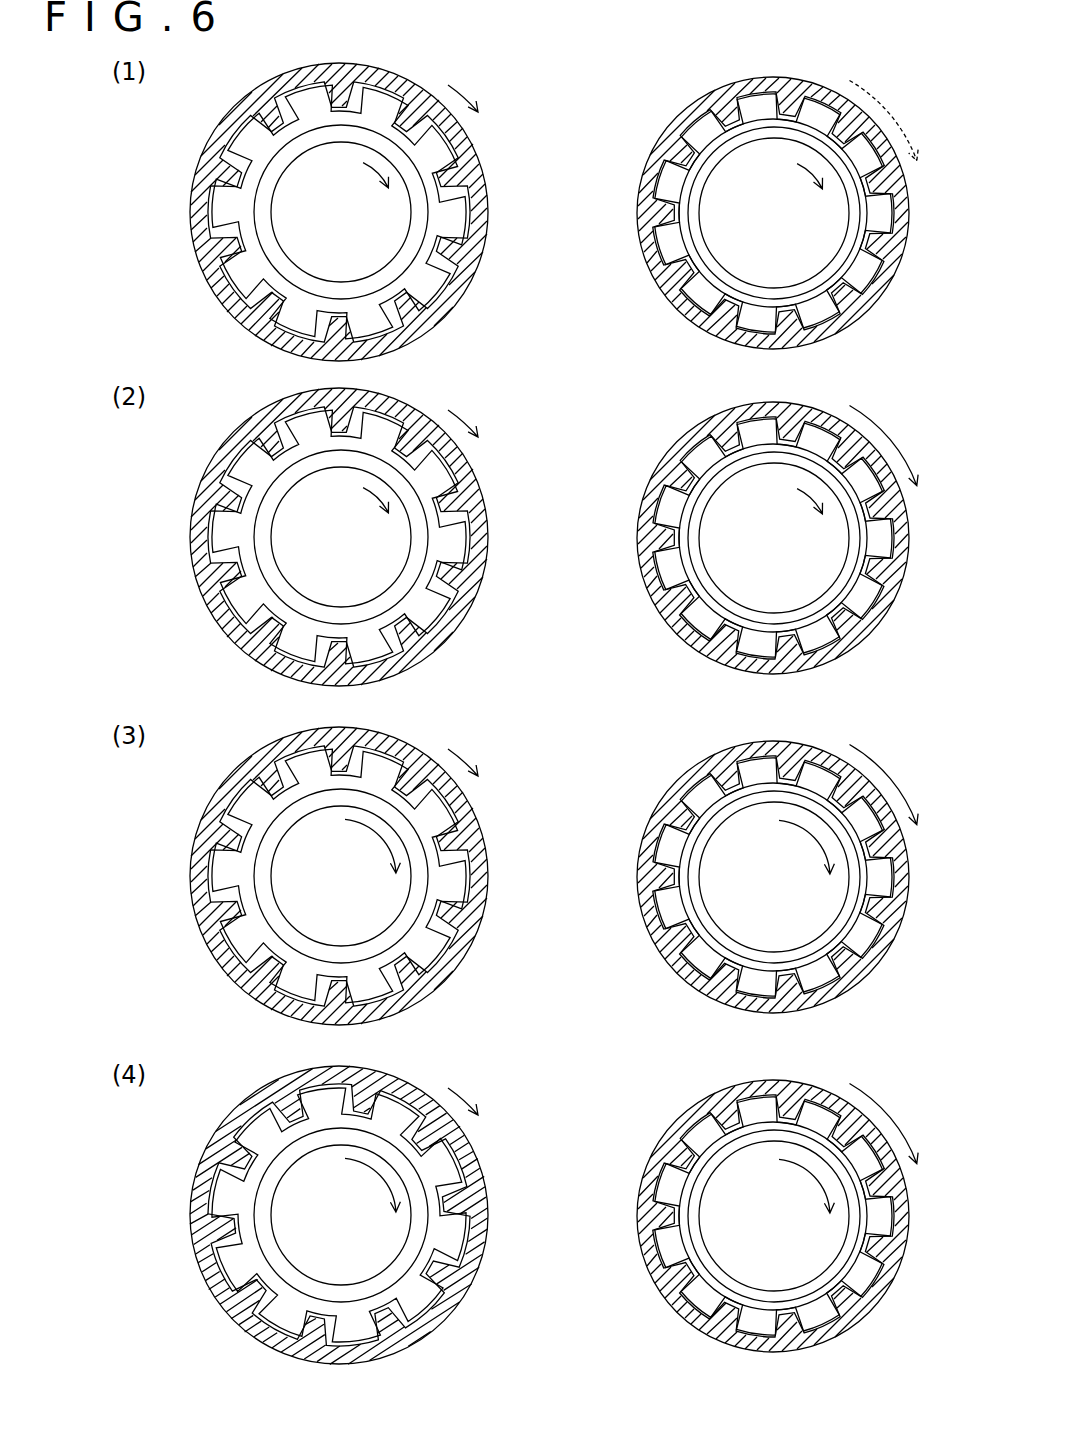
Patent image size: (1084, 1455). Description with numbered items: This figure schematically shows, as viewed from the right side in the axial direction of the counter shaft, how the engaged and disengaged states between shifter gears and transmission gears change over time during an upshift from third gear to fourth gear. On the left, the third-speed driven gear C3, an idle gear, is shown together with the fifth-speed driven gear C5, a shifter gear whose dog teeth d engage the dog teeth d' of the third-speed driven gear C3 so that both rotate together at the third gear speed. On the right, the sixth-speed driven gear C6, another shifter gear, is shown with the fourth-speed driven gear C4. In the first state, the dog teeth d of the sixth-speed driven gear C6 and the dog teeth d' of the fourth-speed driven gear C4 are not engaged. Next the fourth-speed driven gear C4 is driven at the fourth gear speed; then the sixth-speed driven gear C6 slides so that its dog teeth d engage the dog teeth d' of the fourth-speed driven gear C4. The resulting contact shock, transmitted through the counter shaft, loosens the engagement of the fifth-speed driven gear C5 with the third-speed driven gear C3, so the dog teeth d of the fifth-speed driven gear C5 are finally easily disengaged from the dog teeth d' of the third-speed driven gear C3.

The third-speed driven gear C3 is at (228, 122).
The fourth-speed driven gear C4 is at (703, 117).
The fifth-speed driven gear C5 is at (265, 158).
The sixth-speed driven gear C6 is at (723, 148).
The dog teeth d is at (548, 726).
The dog teeth d' is at (562, 719).